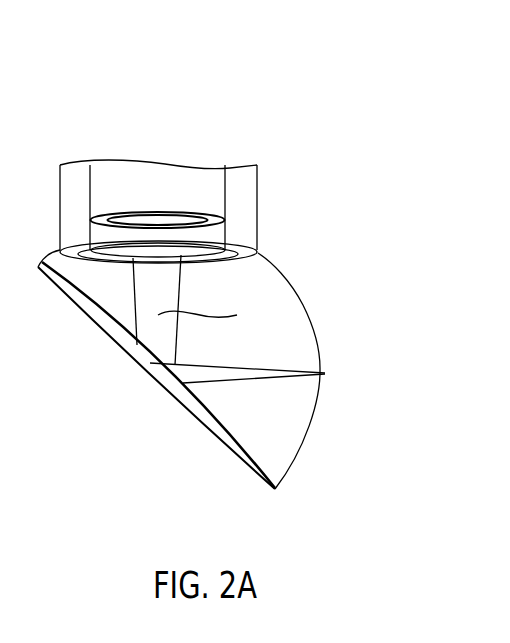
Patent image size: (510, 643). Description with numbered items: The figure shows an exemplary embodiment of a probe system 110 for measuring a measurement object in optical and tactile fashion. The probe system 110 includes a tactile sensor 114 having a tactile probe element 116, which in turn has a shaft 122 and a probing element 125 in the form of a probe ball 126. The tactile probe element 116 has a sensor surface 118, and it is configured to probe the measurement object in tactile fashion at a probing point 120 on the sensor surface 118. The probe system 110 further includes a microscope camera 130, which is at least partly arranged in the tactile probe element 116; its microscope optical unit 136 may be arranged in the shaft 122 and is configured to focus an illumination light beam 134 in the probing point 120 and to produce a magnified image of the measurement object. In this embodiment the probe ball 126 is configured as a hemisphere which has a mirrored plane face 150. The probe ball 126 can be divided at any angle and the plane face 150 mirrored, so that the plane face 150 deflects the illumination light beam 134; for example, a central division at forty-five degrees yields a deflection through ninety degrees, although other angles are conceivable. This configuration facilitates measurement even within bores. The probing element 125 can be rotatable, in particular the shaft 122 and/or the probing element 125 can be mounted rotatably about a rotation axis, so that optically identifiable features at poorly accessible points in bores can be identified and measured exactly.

The probe system 110 is at (227, 140).
The tactile sensor 114 is at (302, 155).
The microscope camera 130 is at (157, 166).
The microscope optical unit 136 is at (155, 168).
The shaft 122 is at (245, 193).
The tactile probe element 116 is at (232, 214).
The sensor surface 118 is at (312, 328).
The probing point 120 is at (325, 373).
The illumination light beam 134 is at (218, 376).
The plane face 150 is at (145, 366).
The probing element 125 is at (373, 437).
The probe ball 126 is at (280, 438).